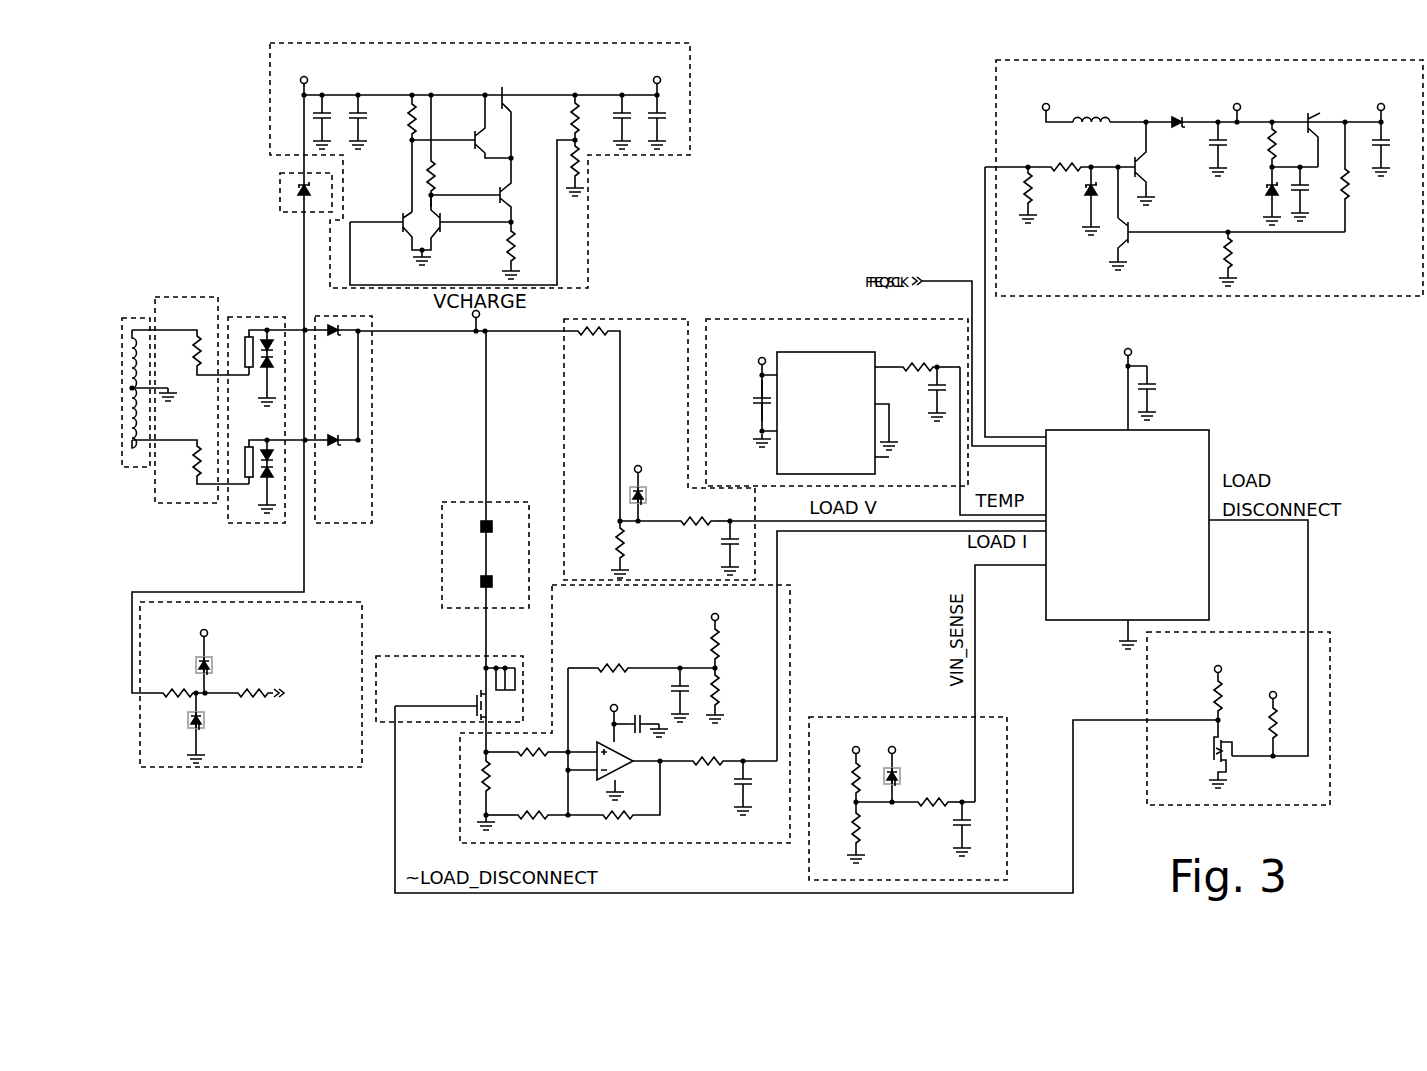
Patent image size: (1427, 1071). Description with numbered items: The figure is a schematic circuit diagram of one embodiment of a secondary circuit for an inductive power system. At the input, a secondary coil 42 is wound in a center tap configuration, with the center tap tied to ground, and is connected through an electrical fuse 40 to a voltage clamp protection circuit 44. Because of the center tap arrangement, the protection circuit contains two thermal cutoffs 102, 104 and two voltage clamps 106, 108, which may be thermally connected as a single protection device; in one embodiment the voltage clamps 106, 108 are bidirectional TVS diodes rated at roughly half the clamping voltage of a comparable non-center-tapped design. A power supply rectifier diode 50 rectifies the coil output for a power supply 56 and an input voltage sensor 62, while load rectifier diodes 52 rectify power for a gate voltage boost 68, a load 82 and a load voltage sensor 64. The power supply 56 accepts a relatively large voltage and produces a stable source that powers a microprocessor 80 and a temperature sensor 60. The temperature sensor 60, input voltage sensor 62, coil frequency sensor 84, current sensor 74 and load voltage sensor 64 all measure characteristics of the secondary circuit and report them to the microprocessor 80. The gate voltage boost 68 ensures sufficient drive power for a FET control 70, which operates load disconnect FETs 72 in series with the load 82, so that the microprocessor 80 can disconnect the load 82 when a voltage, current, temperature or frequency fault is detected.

The electrical fuse 40 is at (183, 297).
The secondary coil 42 is at (135, 317).
The voltage clamp protection circuit 44 is at (284, 405).
The power supply rectifier diode 50 is at (280, 189).
The load rectifier diodes 52 is at (372, 383).
The power supply 56 is at (692, 116).
The temperature sensor 60 is at (738, 318).
The input voltage sensor 62 is at (903, 715).
The load voltage sensor 64 is at (563, 390).
The gate voltage boost 68 is at (996, 75).
The FET control 70 is at (1283, 632).
The load disconnect FETs 72 is at (412, 655).
The current sensor 74 is at (790, 632).
The microprocessor 80 is at (1209, 437).
The load 82 is at (463, 501).
The coil frequency sensor 84 is at (302, 767).
The thermal cutoff 102 is at (247, 478).
The thermal cutoff 104 is at (247, 337).
The voltage clamp 106 is at (276, 358).
The voltage clamp 108 is at (276, 468).